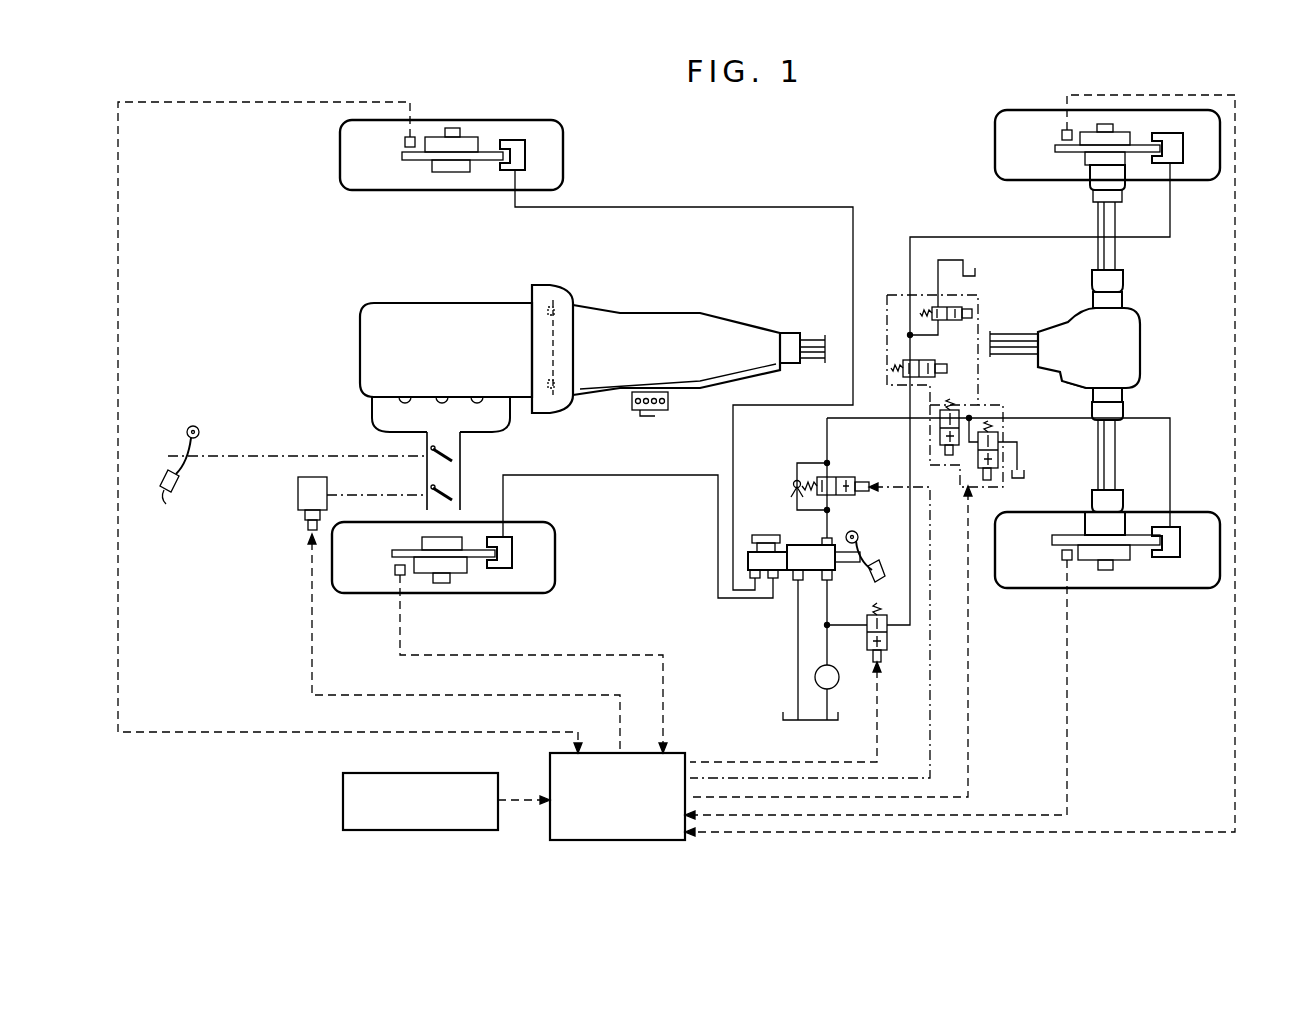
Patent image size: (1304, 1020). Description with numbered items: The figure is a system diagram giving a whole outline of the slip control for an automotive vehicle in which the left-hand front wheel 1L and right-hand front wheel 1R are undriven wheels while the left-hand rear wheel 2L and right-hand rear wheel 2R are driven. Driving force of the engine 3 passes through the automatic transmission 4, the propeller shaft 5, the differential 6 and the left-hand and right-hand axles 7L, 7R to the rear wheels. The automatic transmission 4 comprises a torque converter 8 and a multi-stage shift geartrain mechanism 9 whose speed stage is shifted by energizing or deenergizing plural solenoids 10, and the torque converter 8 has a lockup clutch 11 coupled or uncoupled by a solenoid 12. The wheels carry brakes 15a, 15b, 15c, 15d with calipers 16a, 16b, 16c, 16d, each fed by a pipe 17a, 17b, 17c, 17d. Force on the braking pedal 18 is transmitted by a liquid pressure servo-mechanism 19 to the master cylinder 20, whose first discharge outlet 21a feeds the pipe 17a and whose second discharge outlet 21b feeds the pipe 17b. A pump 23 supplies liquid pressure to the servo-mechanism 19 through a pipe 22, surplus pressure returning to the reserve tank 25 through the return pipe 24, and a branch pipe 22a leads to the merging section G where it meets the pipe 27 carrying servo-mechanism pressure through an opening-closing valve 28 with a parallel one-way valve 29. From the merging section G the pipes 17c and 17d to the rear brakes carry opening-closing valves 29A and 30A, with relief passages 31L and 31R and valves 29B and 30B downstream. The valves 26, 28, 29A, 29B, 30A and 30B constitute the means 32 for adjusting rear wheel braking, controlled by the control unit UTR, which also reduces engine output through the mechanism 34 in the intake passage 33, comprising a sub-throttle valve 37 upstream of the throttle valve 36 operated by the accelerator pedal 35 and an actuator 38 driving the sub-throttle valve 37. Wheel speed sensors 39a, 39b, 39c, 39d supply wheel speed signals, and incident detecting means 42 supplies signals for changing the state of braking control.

The right-hand front wheel 1R is at (376, 191).
The left-hand front wheel 1L is at (356, 594).
The right-hand rear wheel 2R is at (995, 138).
The left-hand rear wheel 2L is at (1168, 588).
The engine 3 is at (443, 308).
The automatic transmission 4 is at (650, 303).
The propeller shaft 5 is at (796, 338).
The differential 6 is at (1136, 345).
The right-hand axle 7R is at (1098, 256).
The left-hand axle 7L is at (1116, 472).
The torque converter 8 is at (565, 300).
The multi-stage shift geartrain mechanism 9 is at (698, 322).
The solenoids 10 is at (656, 412).
The lockup clutch 11 is at (565, 396).
The solenoid 12 is at (634, 412).
The brake 15a is at (479, 576).
The brake 15b is at (491, 139).
The brake 15c is at (1143, 575).
The brake 15d is at (1140, 129).
The caliper 16a is at (514, 556).
The caliper 16b is at (527, 156).
The caliper 16c is at (1178, 530).
The caliper 16d is at (1175, 166).
The pipe 17a is at (540, 475).
The pipe 17b is at (705, 207).
The pipe 17c is at (1172, 430).
The pipe 17d is at (962, 237).
The braking pedal 18 is at (873, 562).
The servo-mechanism 19 is at (806, 545).
The master cylinder 20 is at (765, 548).
The first discharge outlet 21a is at (774, 588).
The second discharge outlet 21b is at (738, 584).
The pipe 22 is at (830, 660).
The branch pipe 22a is at (895, 640).
The pump 23 is at (838, 684).
The return pipe 24 is at (796, 668).
The reserve tank 25 is at (782, 718).
The opening-closing valve 26 is at (867, 620).
The pipe 27 is at (846, 422).
The opening-closing valve 28 is at (856, 482).
The one-way valve 29 is at (795, 478).
The opening-closing valve 29A is at (960, 410).
The opening-closing valve 29B is at (1000, 446).
The opening-closing valve 30A is at (925, 362).
The opening-closing valve 30B is at (930, 308).
The relief passage 31R is at (940, 260).
The relief passage 31L is at (1020, 466).
The means for adjusting braking force 32 is at (947, 504).
The intake passage 33 is at (426, 478).
The mechanism for adjusting sub-throttle opening angle 34 is at (355, 480).
The accelerator pedal 35 is at (174, 480).
The throttle valve 36 is at (460, 456).
The sub-throttle valve 37 is at (460, 494).
The actuator 38 is at (297, 492).
The wheel speed sensor 39a is at (394, 570).
The wheel speed sensor 39b is at (404, 142).
The wheel speed sensor 39c is at (1062, 562).
The wheel speed sensor 39d is at (1061, 135).
The incident detecting means 42 is at (342, 802).
The merging section G is at (905, 417).
The control unit for slip control UTR is at (617, 796).